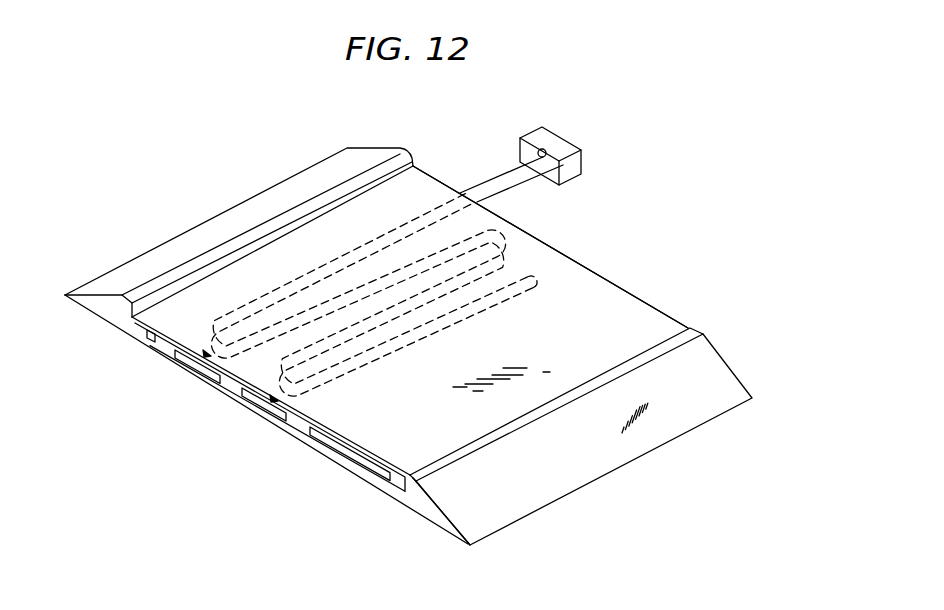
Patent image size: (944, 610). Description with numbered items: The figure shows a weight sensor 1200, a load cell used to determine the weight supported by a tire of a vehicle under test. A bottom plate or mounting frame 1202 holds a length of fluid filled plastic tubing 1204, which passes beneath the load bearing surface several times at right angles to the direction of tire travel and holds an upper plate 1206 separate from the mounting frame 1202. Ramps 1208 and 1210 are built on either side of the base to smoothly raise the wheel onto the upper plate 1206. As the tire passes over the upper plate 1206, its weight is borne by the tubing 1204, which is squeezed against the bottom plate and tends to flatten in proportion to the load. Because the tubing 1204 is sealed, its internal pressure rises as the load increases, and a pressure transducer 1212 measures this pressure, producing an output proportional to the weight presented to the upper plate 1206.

The weight sensor 1200 is at (662, 176).
The mounting frame 1202 is at (338, 462).
The fluid filled plastic tubing 1204 is at (205, 348).
The upper plate 1206 is at (641, 311).
The ramp 1208 is at (562, 496).
The ramp 1210 is at (268, 196).
The pressure transducer 1212 is at (561, 142).